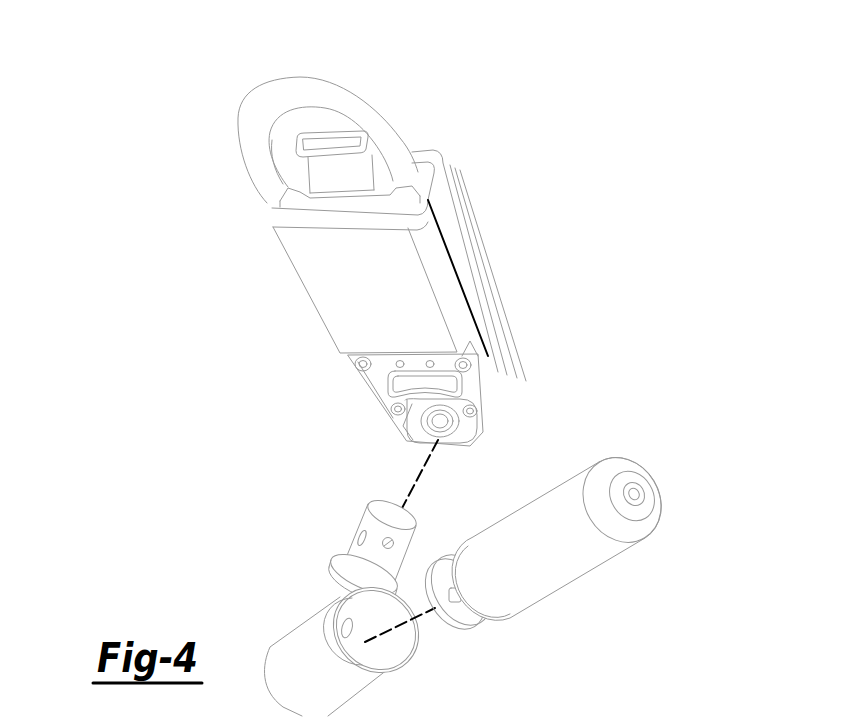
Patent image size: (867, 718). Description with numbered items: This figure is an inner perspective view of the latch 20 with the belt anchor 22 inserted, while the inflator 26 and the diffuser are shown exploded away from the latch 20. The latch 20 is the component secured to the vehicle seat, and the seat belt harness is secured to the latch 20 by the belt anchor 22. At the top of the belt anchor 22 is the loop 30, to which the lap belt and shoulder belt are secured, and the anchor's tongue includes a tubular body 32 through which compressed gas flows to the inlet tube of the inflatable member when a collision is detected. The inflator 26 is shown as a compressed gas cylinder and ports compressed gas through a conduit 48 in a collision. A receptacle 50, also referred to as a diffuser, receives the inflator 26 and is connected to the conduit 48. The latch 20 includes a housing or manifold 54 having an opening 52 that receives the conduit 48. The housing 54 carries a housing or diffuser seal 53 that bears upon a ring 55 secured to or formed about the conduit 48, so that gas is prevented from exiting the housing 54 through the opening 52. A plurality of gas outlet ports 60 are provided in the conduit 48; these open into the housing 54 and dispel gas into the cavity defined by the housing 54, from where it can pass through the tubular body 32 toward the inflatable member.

The latch 20 is at (309, 293).
The belt anchor 22 is at (284, 172).
The inflator 26 is at (548, 560).
The loop 30 is at (372, 118).
The tubular body 32 is at (346, 180).
The conduit 48 is at (384, 540).
The receptacle 50 is at (312, 627).
The opening 52 is at (449, 418).
The diffuser seal 53 is at (421, 431).
The housing 54 is at (487, 383).
The ring 55 is at (338, 572).
The gas outlet ports 60 is at (397, 547).